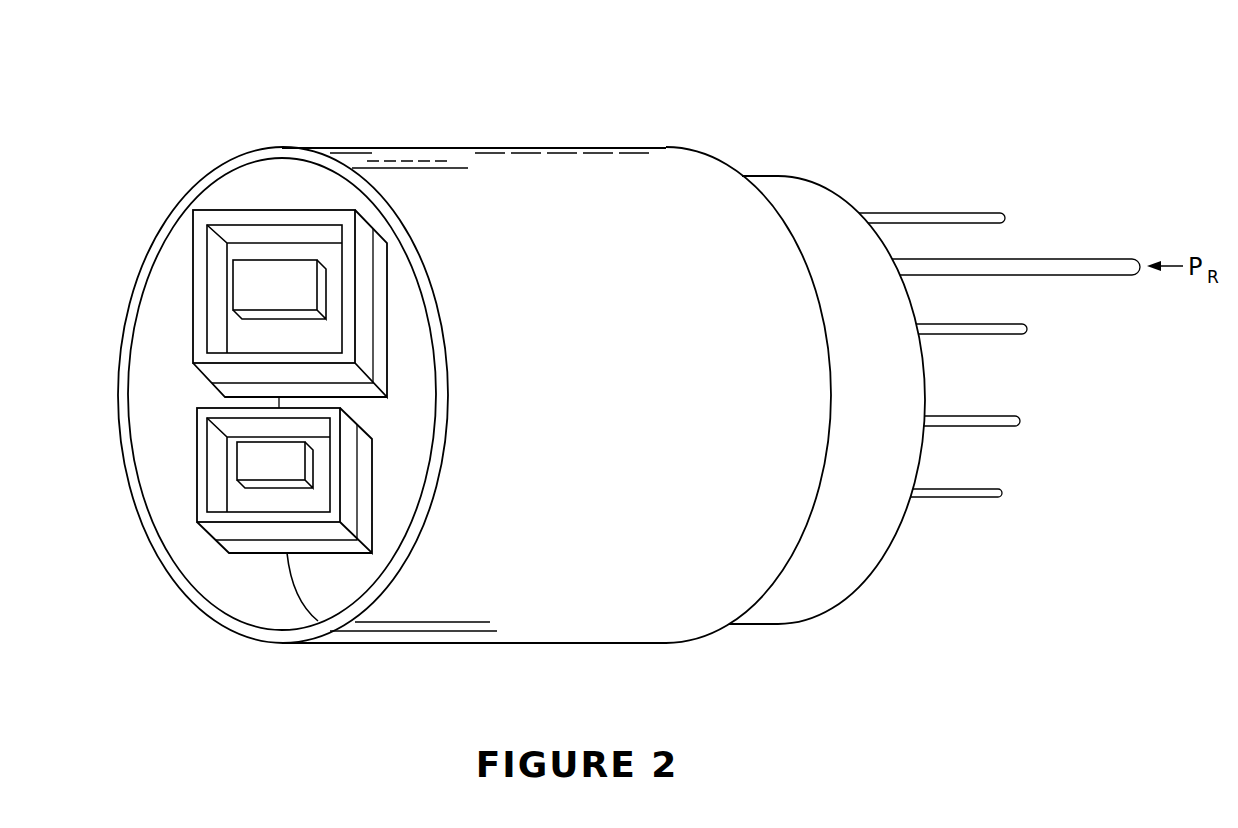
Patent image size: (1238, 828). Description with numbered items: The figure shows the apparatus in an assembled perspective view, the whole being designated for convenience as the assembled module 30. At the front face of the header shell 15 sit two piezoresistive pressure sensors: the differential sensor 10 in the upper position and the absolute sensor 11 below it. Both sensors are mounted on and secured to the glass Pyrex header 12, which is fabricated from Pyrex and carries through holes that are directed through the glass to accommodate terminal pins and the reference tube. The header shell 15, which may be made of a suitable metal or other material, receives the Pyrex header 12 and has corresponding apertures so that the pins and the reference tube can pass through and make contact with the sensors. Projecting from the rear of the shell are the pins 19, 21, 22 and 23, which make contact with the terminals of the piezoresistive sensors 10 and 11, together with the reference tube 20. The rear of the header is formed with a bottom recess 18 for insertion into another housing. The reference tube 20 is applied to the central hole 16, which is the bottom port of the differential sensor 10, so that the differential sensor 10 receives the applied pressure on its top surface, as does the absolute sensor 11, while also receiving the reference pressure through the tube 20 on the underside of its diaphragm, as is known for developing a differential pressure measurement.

The differential sensor 10 is at (200, 222).
The absolute sensor 11 is at (202, 412).
The Pyrex header 12 is at (287, 208).
The header shell 15 is at (547, 177).
The central hole 16 is at (273, 290).
The bottom recess 18 is at (773, 190).
The pin 19 is at (922, 213).
The reference tube 20 is at (1060, 263).
The pin 21 is at (1013, 336).
The pin 22 is at (1005, 428).
The pin 23 is at (985, 500).
The assembled module 30 is at (495, 81).